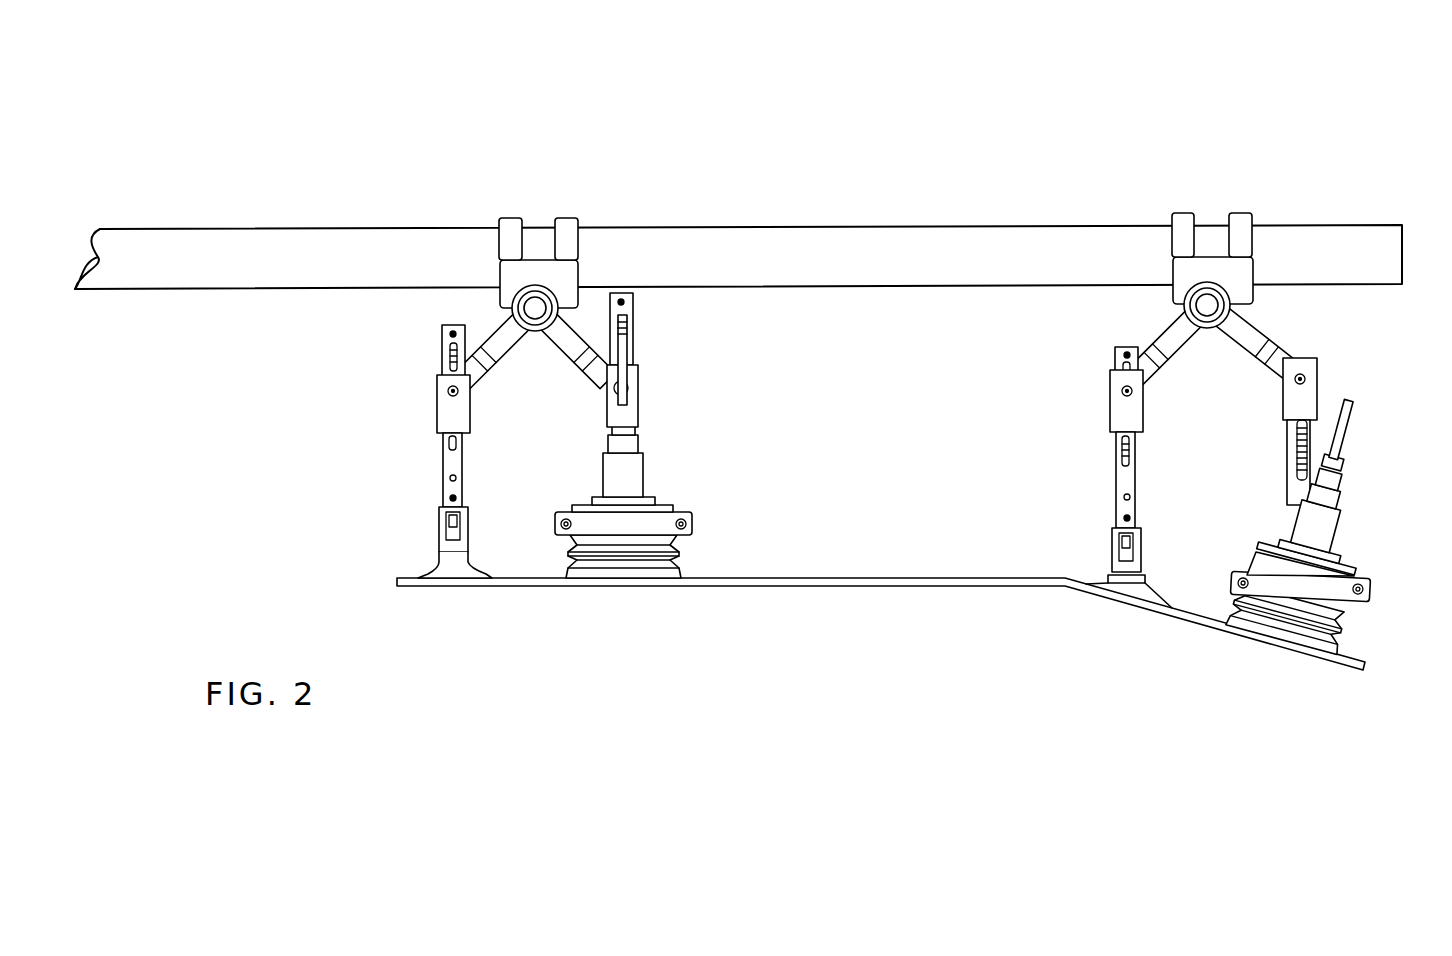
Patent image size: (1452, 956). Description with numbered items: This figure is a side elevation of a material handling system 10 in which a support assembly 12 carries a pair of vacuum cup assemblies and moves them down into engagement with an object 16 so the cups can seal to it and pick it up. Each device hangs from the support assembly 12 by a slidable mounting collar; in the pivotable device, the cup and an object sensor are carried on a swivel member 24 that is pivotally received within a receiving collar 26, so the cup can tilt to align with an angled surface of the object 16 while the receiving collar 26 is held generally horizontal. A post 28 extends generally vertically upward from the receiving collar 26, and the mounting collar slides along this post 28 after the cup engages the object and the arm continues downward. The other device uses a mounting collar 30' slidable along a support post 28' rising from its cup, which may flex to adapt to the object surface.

The material handling system 10 is at (980, 97).
The support assembly 12 is at (852, 170).
The object 16 is at (845, 580).
The swivel member 24 is at (1258, 566).
The receiving collar 26 is at (1352, 583).
The post 28 is at (1261, 462).
The support post 28' is at (485, 469).
The mounting collar 30' is at (405, 379).